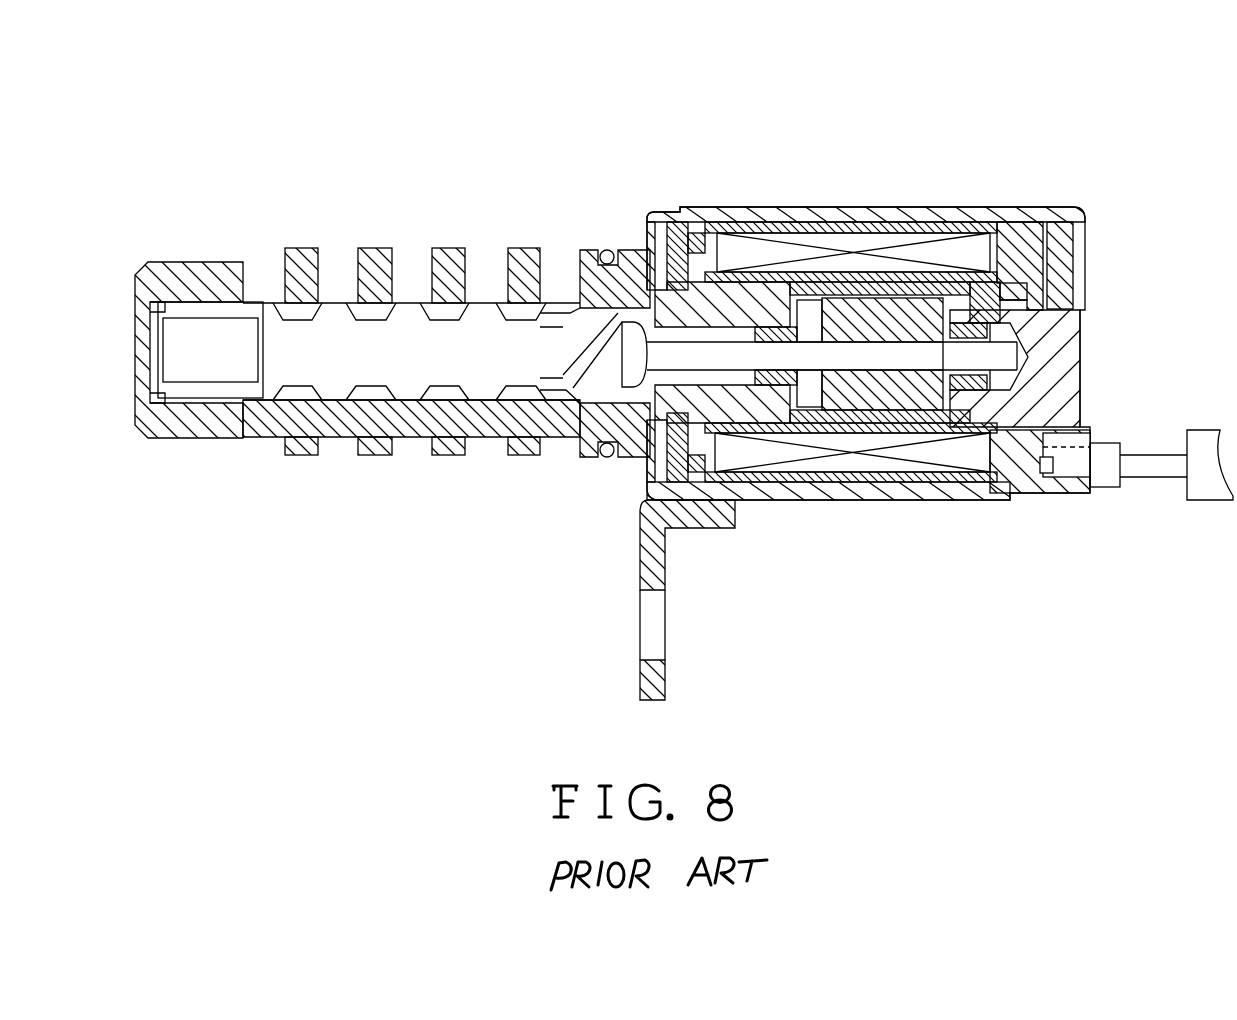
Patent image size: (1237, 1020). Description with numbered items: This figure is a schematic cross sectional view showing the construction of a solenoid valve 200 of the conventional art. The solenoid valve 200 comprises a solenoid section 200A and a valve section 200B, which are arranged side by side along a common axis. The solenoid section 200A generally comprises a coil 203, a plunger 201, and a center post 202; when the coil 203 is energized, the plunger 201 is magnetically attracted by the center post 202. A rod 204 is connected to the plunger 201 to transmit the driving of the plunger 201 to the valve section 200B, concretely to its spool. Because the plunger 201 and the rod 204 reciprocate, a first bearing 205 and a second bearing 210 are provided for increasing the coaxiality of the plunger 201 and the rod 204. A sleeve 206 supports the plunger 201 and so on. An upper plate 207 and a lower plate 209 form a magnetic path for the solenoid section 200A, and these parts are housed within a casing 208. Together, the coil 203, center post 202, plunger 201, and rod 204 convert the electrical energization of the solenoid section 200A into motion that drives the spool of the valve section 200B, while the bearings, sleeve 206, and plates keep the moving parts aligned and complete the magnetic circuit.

The solenoid valve 200 is at (343, 98).
The solenoid section 200A is at (888, 158).
The valve section 200B is at (468, 212).
The plunger 201 is at (878, 385).
The center post 202 is at (748, 270).
The coil 203 is at (960, 258).
The rod 204 is at (733, 373).
The first bearing 205 is at (1020, 252).
The sleeve 206 is at (932, 417).
The upper plate 207 is at (1085, 285).
The casing 208 is at (820, 207).
The lower plate 209 is at (678, 213).
The second bearing 210 is at (783, 400).